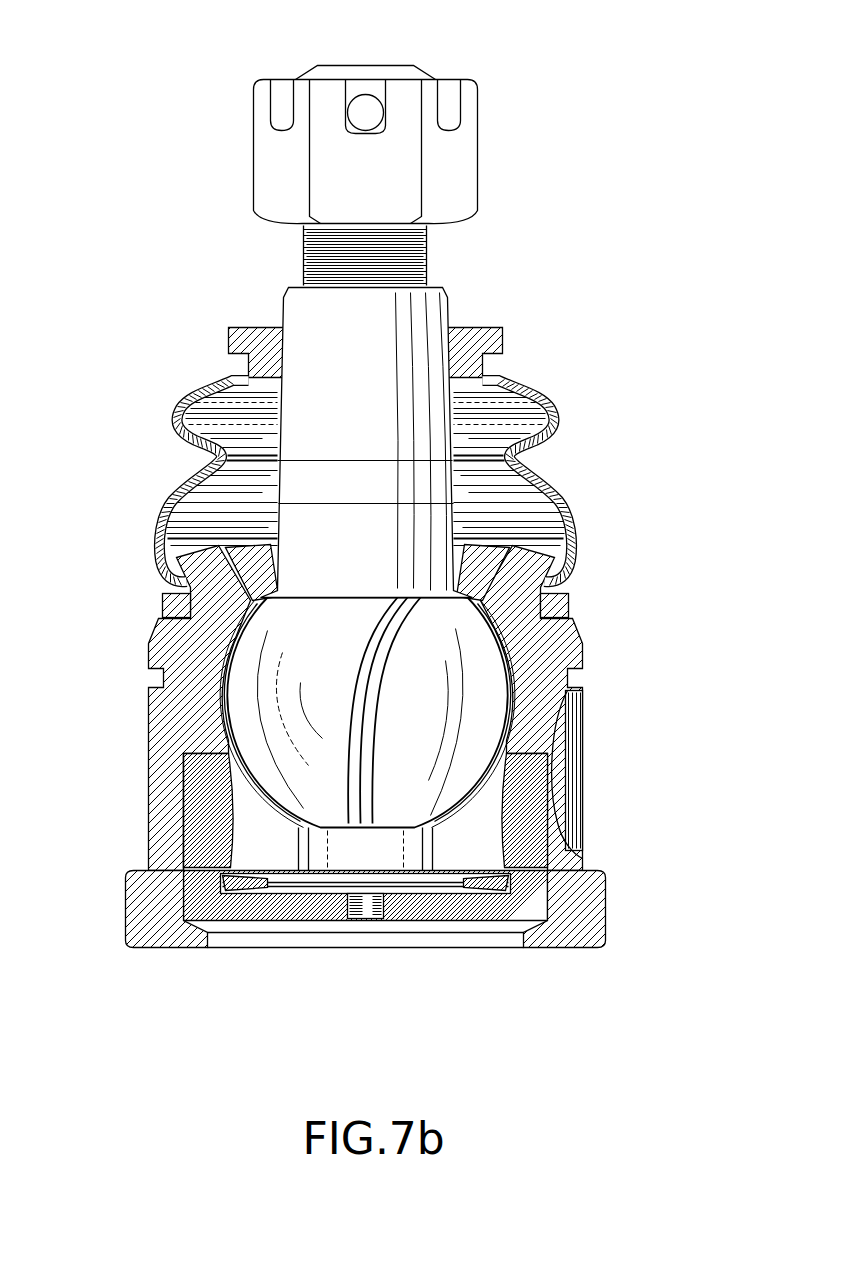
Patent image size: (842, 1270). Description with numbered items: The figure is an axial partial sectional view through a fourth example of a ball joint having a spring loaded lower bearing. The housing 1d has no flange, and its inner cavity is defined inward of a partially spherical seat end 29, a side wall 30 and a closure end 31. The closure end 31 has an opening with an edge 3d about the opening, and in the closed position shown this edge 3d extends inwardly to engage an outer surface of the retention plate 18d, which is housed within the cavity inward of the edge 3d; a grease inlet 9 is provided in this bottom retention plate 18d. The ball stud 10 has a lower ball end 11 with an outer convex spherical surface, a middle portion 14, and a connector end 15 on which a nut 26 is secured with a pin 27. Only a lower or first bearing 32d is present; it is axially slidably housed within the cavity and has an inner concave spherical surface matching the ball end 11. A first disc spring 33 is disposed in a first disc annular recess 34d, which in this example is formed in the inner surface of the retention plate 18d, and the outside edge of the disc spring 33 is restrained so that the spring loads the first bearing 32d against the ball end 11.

The pin 27 is at (366, 115).
The nut 26 is at (283, 155).
The connector end 15 is at (412, 248).
The middle portion 14 is at (430, 325).
The ball stud 10 is at (317, 432).
The lower ball end 11 is at (428, 727).
The housing 1d is at (577, 637).
The partially spherical seat end 29 is at (220, 710).
The first disc annular recess 34d is at (220, 803).
The side wall 30 is at (183, 820).
The first bearing 32d is at (518, 807).
The first disc spring 33 is at (497, 868).
The edge 3d is at (188, 940).
The retention plate 18d is at (287, 920).
The grease inlet 9 is at (368, 918).
The closure end 31 is at (421, 567).